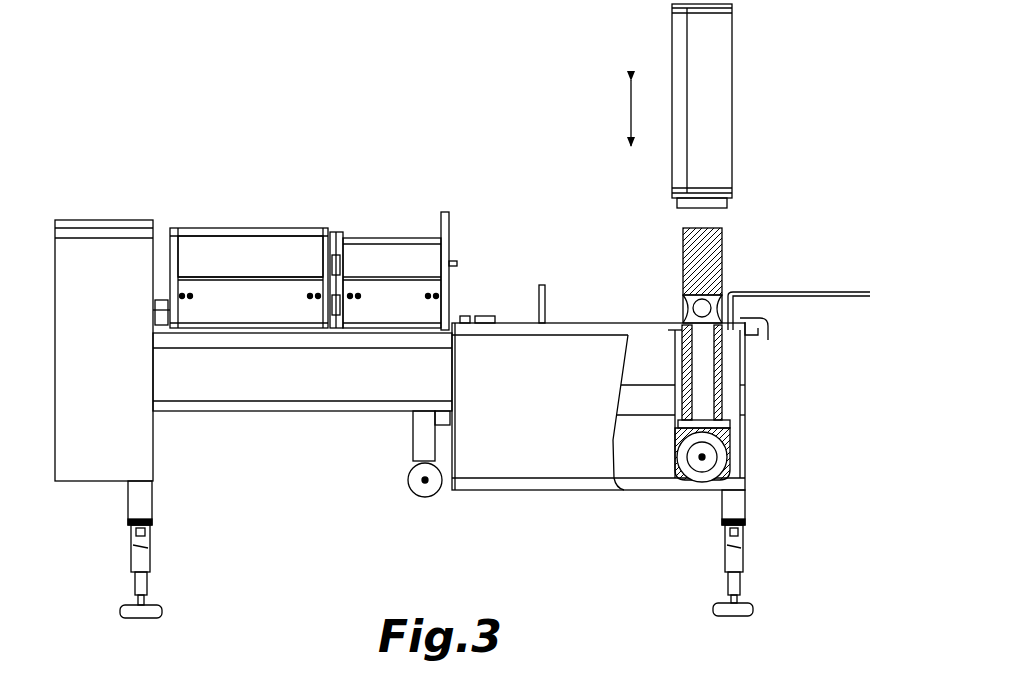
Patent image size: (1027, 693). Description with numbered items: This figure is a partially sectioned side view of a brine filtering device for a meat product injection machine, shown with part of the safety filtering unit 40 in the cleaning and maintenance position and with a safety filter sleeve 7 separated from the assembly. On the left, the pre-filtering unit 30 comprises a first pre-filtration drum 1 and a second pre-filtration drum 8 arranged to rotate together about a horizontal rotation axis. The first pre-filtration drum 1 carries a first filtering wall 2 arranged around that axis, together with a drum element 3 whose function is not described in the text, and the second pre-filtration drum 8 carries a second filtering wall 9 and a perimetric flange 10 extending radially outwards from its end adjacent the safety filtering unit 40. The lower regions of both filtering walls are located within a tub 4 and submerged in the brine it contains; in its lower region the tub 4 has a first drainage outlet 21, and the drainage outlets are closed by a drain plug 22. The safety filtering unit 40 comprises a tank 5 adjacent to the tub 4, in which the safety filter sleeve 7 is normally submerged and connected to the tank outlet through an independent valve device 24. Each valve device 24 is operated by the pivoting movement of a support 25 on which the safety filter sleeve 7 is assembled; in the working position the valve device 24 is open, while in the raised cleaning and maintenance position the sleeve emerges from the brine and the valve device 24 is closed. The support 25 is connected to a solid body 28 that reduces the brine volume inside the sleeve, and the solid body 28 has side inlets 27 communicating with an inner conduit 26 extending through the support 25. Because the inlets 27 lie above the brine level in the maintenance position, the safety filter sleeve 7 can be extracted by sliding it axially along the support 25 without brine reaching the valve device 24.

The first pre-filtration drum 1 is at (284, 226).
The first filtering wall 2 is at (240, 237).
The roller cover 3 is at (222, 232).
The tub 4 is at (263, 441).
The tank 5 is at (635, 485).
The safety filter sleeve 7 is at (722, 66).
The second pre-filtration drum 8 is at (405, 233).
The second filtering wall 9 is at (363, 237).
The perimetric flange 10 is at (447, 224).
The first drainage outlet 21 is at (418, 447).
The drain plug 22 is at (420, 487).
The valve device 24 is at (692, 492).
The support 25 is at (732, 432).
The inner conduit 26 is at (707, 360).
The side inlet 27 is at (692, 310).
The solid body 28 is at (712, 262).
The pre-filtering unit 30 is at (340, 147).
The safety filtering unit 40 is at (587, 237).